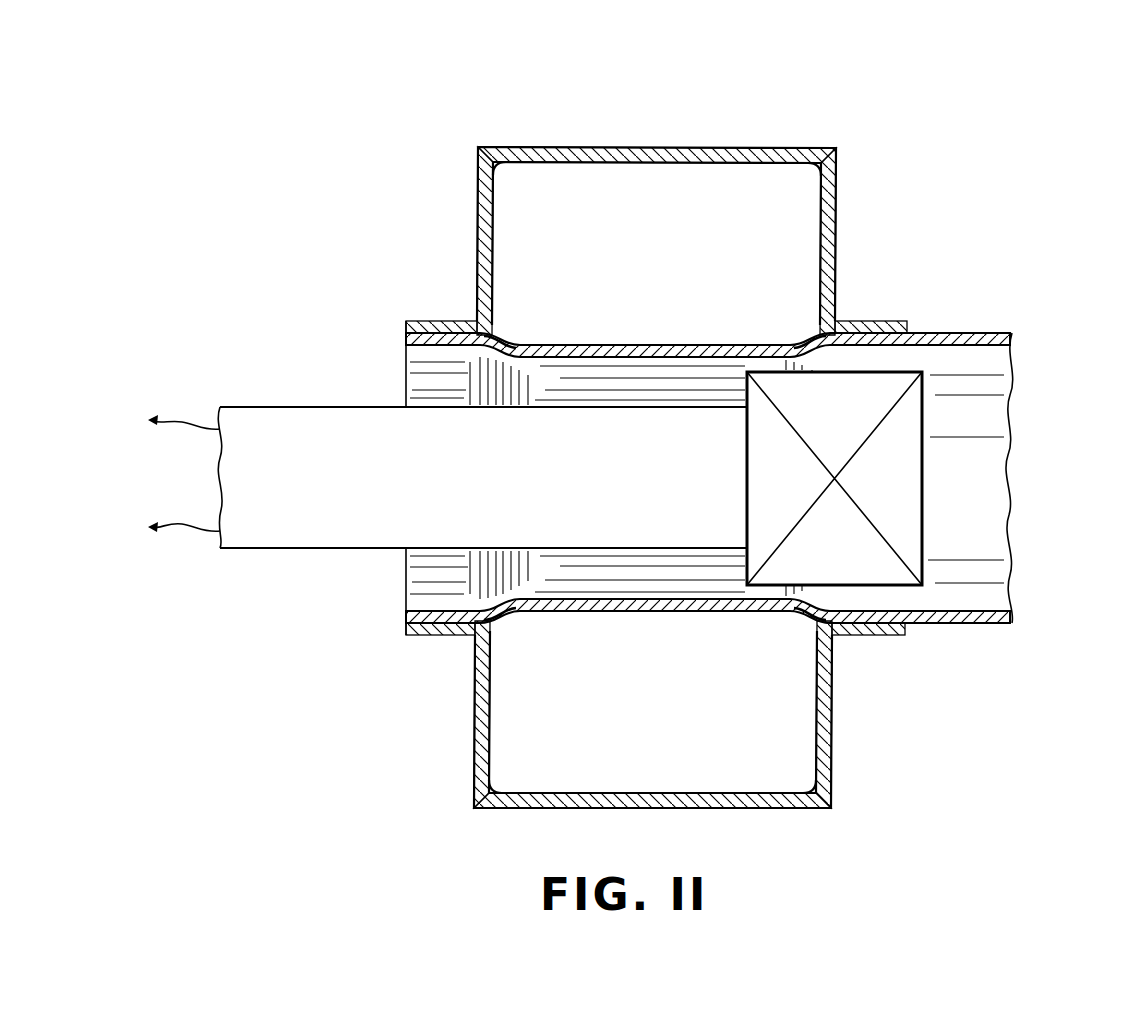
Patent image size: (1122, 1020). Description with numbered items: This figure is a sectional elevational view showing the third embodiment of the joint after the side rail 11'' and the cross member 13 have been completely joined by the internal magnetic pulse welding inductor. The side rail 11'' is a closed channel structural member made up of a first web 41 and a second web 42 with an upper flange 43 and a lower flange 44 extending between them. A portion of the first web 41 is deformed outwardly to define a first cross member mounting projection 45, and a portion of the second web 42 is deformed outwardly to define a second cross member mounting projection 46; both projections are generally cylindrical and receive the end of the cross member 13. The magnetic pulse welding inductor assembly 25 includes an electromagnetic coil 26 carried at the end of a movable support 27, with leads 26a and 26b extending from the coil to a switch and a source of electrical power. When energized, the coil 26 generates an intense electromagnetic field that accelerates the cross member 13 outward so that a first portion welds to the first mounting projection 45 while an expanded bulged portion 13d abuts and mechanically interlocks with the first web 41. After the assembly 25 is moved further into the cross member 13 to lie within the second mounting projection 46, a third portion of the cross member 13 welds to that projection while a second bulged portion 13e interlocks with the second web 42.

The side rail 11'' is at (618, 449).
The cross member 13 is at (993, 335).
The bulged portion 13d is at (499, 340).
The second bulged portion 13e is at (802, 340).
The magnetic pulse welding inductor assembly 25 is at (603, 481).
The electromagnetic coil 26 is at (912, 436).
The lead 26a is at (176, 420).
The lead 26b is at (182, 527).
The movable support 27 is at (303, 540).
The first web 41 is at (478, 234).
The second web 42 is at (836, 226).
The upper flange 43 is at (722, 148).
The lower flange 44 is at (720, 808).
The first cross member mounting projection 45 is at (432, 322).
The second cross member mounting projection 46 is at (884, 321).